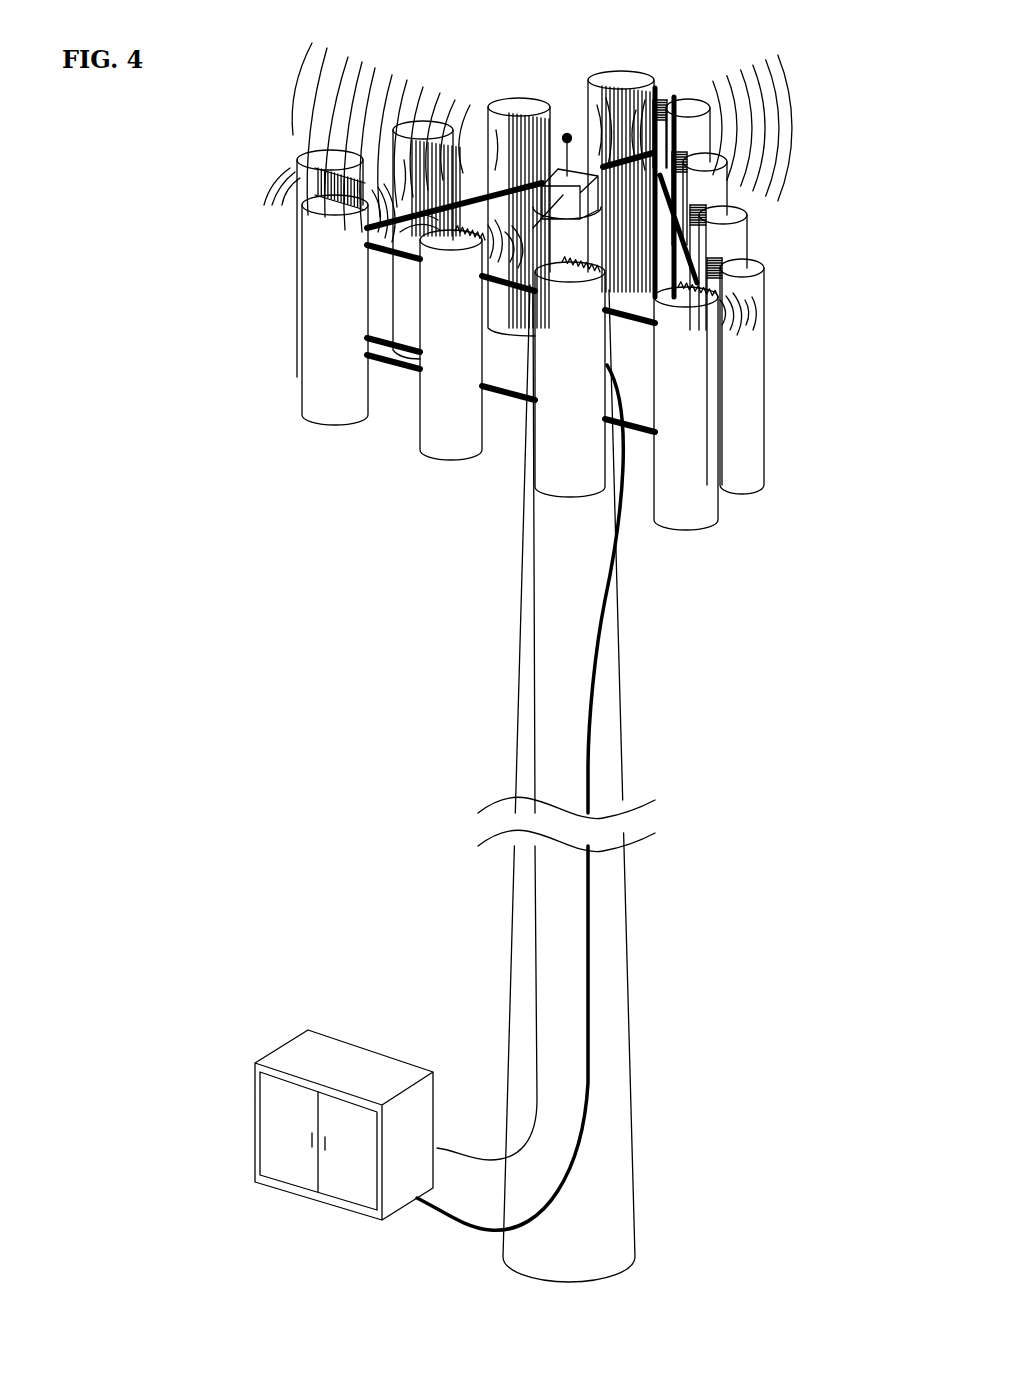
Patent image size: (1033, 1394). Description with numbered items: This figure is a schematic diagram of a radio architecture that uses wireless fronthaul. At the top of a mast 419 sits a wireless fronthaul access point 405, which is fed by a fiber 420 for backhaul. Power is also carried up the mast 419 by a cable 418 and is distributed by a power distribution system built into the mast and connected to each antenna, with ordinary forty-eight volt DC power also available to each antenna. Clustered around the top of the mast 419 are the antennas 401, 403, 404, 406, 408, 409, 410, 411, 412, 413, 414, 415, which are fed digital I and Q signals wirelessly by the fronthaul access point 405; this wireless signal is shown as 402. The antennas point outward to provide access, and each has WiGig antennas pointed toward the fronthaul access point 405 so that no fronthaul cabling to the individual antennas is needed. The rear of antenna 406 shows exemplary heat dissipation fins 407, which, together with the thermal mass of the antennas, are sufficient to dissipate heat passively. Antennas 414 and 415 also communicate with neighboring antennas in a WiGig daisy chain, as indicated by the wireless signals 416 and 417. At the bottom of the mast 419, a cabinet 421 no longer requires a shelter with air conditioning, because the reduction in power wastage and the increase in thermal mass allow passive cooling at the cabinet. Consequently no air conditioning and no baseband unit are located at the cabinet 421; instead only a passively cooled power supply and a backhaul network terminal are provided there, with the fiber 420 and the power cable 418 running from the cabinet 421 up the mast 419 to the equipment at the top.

The antenna 401 is at (308, 173).
The wireless signal 402 is at (331, 60).
The antenna 403 is at (433, 120).
The antenna 404 is at (495, 97).
The wireless fronthaul access point 405 is at (566, 133).
The antenna 406 is at (605, 68).
The heat dissipation fins 407 is at (653, 87).
The antenna 408 is at (685, 92).
The antenna 409 is at (733, 170).
The antenna 410 is at (753, 227).
The antenna 411 is at (767, 328).
The antenna 412 is at (680, 527).
The antenna 413 is at (585, 493).
The antenna 414 is at (422, 455).
The antenna 415 is at (308, 420).
The wireless signal 416 is at (368, 245).
The wireless signal 417 is at (288, 202).
The power cable 418 is at (592, 973).
The mast 419 is at (637, 1228).
The fiber 420 is at (535, 1068).
The cabinet 421 is at (292, 1043).